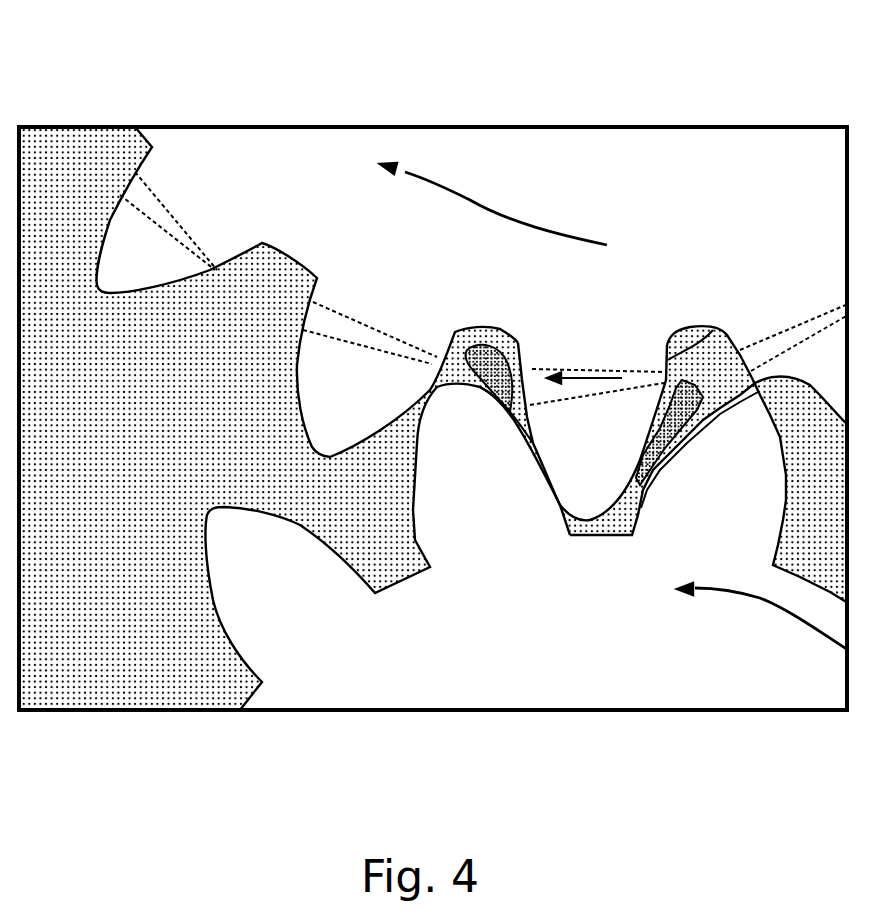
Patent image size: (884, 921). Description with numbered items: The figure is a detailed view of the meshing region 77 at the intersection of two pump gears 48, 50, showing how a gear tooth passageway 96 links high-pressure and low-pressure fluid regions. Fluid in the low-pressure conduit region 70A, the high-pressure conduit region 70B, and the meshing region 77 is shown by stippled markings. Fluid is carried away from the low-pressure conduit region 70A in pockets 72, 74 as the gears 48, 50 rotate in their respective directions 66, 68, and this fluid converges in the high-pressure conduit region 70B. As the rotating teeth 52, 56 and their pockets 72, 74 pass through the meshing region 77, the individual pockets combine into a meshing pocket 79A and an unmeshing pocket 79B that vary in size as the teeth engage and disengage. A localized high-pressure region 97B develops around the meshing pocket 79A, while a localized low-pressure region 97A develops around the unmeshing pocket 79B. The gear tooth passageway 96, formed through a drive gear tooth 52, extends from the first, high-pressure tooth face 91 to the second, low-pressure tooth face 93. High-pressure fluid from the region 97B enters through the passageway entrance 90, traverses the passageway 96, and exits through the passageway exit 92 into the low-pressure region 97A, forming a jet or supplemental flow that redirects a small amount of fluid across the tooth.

The gear 48 is at (658, 162).
The gear 50 is at (667, 690).
The drive gear teeth 52 is at (121, 263).
The teeth 56 is at (731, 445).
The direction 66 is at (493, 210).
The direction 68 is at (778, 606).
The low-pressure conduit region 70A is at (71, 430).
The high-pressure conduit region 70B is at (835, 544).
The pocket 72 is at (216, 335).
The pocket 74 is at (351, 530).
The meshing region 77 is at (738, 208).
The meshing pocket 79A is at (752, 390).
The unmeshing pocket 79B is at (518, 343).
The gear tooth passageway entrance 90 is at (664, 380).
The first tooth face 91 is at (707, 336).
The gear tooth passageway exit 92 is at (532, 370).
The second tooth face 93 is at (517, 415).
The gear tooth passageway 96 is at (418, 346).
The localized low-pressure region 97A is at (497, 372).
The localized high-pressure region 97B is at (688, 403).